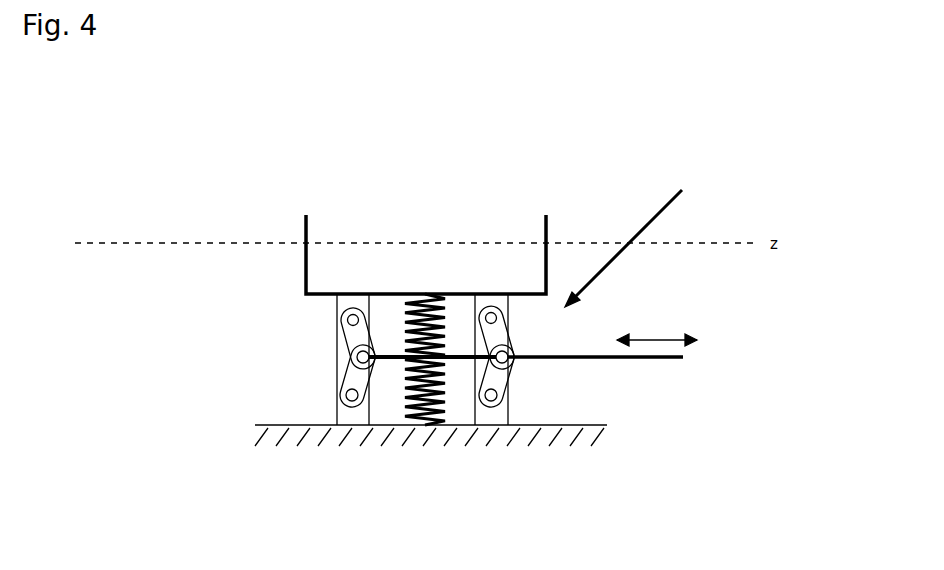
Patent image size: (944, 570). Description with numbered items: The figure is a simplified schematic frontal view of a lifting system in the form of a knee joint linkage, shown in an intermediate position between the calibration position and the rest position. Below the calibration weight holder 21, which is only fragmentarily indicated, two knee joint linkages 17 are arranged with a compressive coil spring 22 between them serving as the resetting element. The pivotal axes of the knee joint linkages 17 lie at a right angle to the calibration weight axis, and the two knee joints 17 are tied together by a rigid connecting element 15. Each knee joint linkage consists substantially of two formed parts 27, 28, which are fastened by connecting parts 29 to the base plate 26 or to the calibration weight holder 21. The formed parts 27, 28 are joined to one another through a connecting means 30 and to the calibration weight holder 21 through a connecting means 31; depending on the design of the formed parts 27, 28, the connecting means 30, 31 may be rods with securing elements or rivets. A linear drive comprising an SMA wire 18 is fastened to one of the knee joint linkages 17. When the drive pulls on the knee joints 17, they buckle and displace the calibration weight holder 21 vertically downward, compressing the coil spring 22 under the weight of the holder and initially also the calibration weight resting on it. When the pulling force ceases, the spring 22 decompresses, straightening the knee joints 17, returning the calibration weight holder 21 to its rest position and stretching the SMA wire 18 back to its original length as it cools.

The rigid connecting element 15 is at (386, 352).
The knee joint linkage 17 is at (630, 236).
The SMA wire 18 is at (672, 360).
The calibration weight holder 21 is at (463, 222).
The compressive coil spring 22 is at (440, 427).
The base plate 26 is at (570, 440).
The formed part 27 is at (343, 378).
The formed part 28 is at (352, 335).
The connecting parts 29 is at (340, 300).
The connecting means 30 is at (357, 358).
The connecting means 31 is at (346, 318).